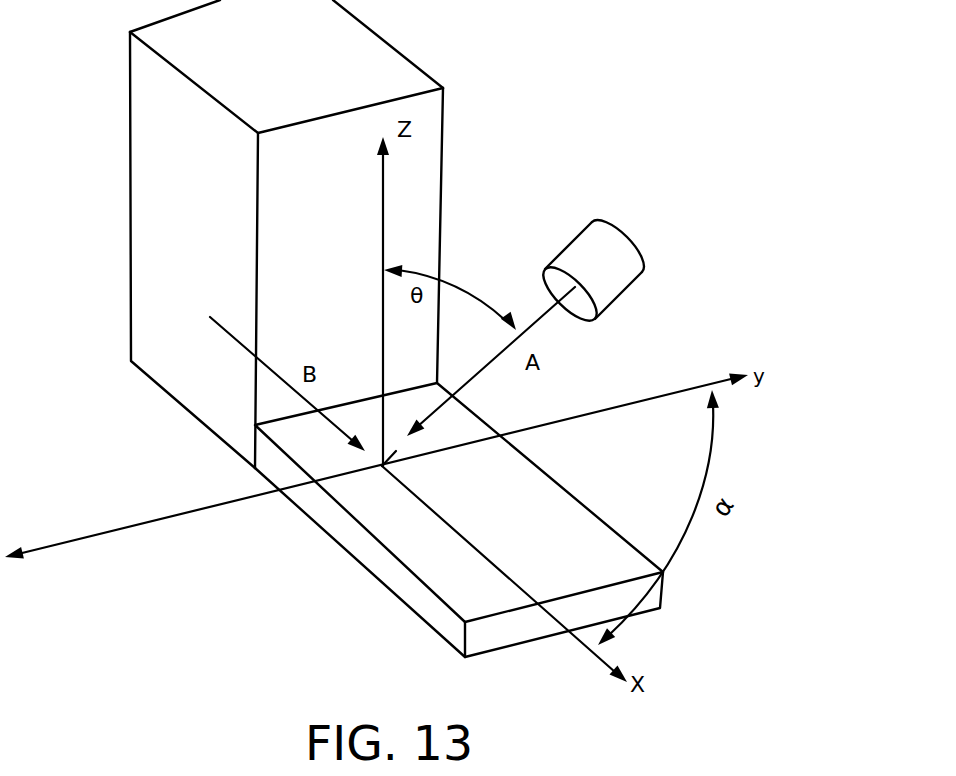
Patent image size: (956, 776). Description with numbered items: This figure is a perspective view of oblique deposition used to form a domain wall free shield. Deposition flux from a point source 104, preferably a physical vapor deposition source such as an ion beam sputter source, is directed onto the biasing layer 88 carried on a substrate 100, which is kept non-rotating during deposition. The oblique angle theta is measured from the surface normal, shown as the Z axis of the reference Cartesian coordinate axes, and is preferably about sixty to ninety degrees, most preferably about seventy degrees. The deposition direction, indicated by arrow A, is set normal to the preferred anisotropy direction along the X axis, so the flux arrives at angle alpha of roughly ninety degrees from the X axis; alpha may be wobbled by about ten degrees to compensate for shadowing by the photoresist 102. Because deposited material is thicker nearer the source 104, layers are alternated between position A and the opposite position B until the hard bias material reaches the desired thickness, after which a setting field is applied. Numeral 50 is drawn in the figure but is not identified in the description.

The photoresist 102 is at (192, 194).
The point source 104 is at (620, 256).
The biasing layer 88 is at (408, 553).
The substrate 100 is at (181, 622).
The assembly 50 is at (238, 643).